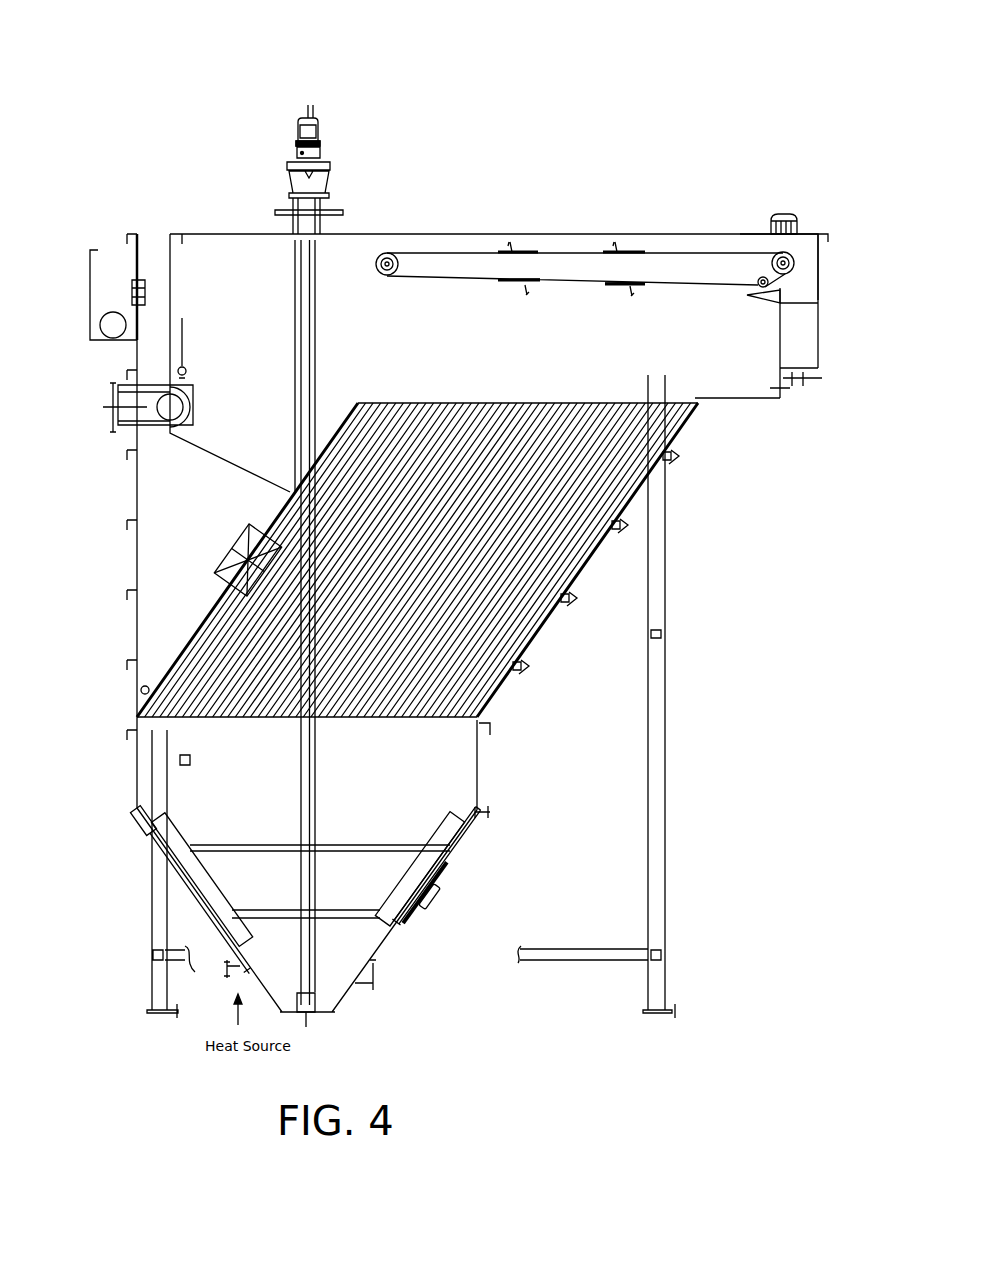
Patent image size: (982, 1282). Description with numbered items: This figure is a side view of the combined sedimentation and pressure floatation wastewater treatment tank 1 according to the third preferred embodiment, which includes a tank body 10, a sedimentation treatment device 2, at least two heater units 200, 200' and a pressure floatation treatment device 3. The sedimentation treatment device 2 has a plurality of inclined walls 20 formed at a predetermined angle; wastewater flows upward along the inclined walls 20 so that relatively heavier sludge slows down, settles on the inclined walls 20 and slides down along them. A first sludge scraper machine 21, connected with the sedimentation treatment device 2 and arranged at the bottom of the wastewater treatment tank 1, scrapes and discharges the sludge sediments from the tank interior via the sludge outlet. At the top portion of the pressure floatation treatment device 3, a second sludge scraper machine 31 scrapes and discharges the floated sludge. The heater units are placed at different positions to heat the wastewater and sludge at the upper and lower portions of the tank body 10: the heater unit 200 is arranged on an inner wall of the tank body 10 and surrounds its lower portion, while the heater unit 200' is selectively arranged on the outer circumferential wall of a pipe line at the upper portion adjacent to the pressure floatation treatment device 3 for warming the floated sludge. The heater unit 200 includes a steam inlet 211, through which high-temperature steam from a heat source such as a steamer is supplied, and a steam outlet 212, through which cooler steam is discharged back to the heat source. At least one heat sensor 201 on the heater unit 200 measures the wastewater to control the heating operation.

The wastewater treatment tank 1 is at (478, 1025).
The sedimentation treatment device 2 is at (270, 425).
The pressure floatation treatment device 3 is at (650, 160).
The tank body 10 is at (478, 757).
The inclined walls 20 is at (620, 490).
The first sludge scraper machine 21 is at (312, 108).
The second sludge scraper machine 31 is at (567, 252).
The heater unit 200 is at (293, 886).
The heater unit 200' is at (128, 439).
The heat sensor 201 is at (180, 760).
The steam inlet 211 is at (226, 977).
The steam outlet 212 is at (490, 817).